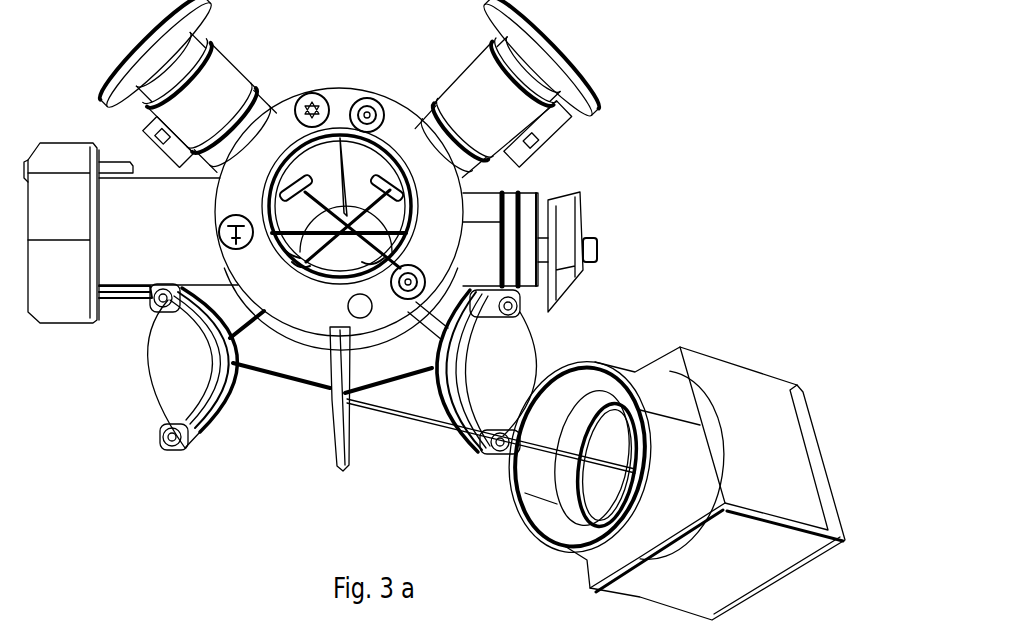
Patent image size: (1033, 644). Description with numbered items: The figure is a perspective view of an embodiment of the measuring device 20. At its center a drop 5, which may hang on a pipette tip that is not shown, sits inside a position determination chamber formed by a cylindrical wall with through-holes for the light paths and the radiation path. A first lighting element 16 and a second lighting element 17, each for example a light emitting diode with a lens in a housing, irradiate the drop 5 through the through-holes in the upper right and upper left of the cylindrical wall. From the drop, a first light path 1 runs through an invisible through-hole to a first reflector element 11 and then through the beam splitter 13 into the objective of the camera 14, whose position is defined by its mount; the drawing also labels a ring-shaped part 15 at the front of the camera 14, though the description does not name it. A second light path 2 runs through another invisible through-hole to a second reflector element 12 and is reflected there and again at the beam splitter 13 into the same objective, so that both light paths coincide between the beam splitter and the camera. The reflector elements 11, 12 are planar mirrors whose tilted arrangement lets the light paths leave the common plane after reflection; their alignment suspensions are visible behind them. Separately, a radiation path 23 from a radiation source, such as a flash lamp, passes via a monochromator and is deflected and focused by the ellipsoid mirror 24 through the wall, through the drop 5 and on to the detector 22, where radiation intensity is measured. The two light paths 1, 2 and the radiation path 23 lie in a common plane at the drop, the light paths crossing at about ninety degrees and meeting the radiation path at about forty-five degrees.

The first light path 1 is at (293, 387).
The second light path 2 is at (398, 388).
The drop 5 is at (349, 219).
The first reflector element 11 is at (262, 389).
The second reflector element 12 is at (432, 387).
The beam splitter 13 is at (333, 441).
The camera 14 is at (718, 380).
The lens ring 15 is at (488, 500).
The first lighting element 16 is at (581, 78).
The second lighting element 17 is at (118, 54).
The measuring device 20 is at (337, 31).
The detector 22 is at (600, 214).
The radiation path 23 is at (296, 258).
The ellipsoid mirror 24 is at (63, 340).